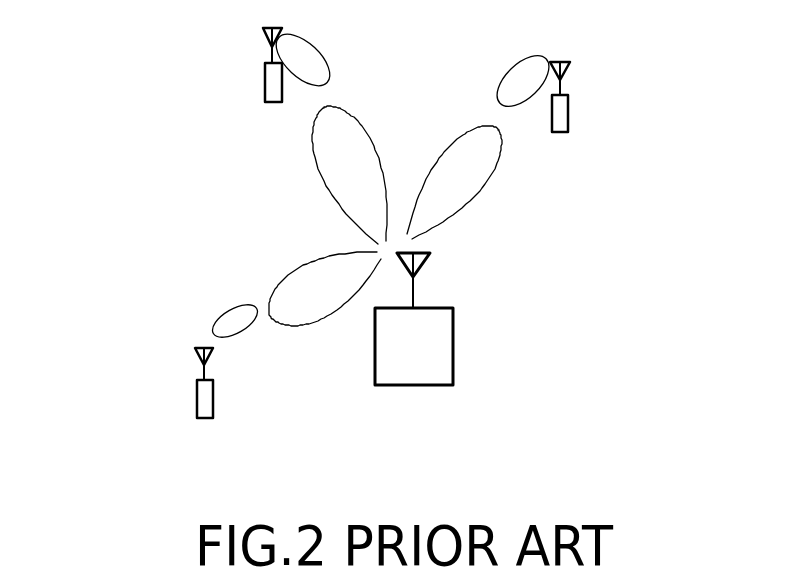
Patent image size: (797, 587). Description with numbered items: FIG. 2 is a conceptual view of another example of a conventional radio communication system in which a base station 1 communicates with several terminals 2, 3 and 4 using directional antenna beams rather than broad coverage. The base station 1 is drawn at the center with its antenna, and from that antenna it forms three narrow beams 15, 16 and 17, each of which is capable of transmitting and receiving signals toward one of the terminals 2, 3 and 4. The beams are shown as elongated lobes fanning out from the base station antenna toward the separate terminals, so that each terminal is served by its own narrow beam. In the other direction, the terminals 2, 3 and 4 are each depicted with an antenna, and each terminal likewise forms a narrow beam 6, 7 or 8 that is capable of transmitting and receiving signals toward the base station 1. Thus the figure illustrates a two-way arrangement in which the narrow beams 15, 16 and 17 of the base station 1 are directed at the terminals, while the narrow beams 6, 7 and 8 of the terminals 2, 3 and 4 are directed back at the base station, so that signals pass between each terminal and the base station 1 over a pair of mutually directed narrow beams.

The base station 1 is at (447, 356).
The terminal 2 is at (568, 120).
The terminal 3 is at (195, 403).
The terminal 4 is at (262, 90).
The narrow beam 6 is at (512, 68).
The narrow beam 7 is at (233, 308).
The narrow beam 8 is at (325, 55).
The narrow beam 15 is at (483, 180).
The narrow beam 16 is at (312, 265).
The narrow beam 17 is at (370, 133).